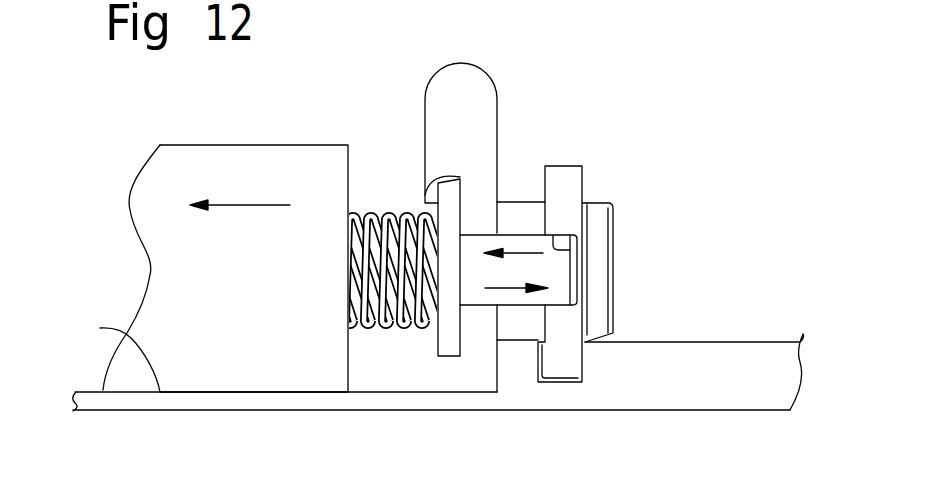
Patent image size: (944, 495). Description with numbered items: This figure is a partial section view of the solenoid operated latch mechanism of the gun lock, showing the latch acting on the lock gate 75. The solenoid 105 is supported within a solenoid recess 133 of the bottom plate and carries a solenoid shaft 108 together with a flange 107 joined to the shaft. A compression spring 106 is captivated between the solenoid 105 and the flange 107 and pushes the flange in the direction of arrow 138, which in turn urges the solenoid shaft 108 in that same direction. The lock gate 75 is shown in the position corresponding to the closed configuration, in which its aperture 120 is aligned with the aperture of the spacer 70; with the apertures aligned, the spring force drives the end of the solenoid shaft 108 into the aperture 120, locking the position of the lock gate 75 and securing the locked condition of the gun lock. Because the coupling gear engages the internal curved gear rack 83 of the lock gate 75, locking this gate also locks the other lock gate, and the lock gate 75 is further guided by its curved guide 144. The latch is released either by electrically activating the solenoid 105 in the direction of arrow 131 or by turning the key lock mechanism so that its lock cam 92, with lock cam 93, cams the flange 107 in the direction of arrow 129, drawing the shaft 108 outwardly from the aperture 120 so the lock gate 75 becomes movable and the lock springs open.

The spacer 70 is at (524, 328).
The lock gate 75 is at (565, 353).
The internal curved gear rack 83 is at (607, 296).
The lock cam 92 is at (480, 97).
The lock cam 93 is at (494, 232).
The solenoid 105 is at (176, 146).
The compression spring 106 is at (392, 325).
The flange 107 is at (438, 343).
The solenoid shaft 108 is at (550, 267).
The aperture 120 is at (578, 272).
The arrow 129 is at (522, 253).
The arrow 131 is at (240, 206).
The solenoid recess 133 is at (101, 352).
The arrow 138 is at (503, 289).
The curved guide 144 is at (562, 167).